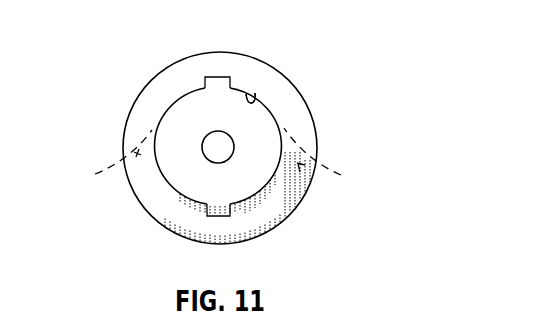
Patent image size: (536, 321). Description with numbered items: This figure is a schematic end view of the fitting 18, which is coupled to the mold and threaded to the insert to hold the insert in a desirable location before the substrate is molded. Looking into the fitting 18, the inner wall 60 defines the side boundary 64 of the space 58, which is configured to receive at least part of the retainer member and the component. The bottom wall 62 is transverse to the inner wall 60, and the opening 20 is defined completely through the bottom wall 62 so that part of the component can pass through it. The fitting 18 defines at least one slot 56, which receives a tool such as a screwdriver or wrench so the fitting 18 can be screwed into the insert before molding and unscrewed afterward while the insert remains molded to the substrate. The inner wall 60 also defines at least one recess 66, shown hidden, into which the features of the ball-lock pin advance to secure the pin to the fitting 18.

The fitting 18 is at (113, 47).
The opening 20 is at (235, 144).
The slot 56 is at (229, 79).
The space 58 is at (186, 169).
The inner wall 60 is at (254, 97).
The side boundary 64 is at (250, 98).
The bottom wall 62 is at (253, 162).
The recess 66 is at (219, 160).